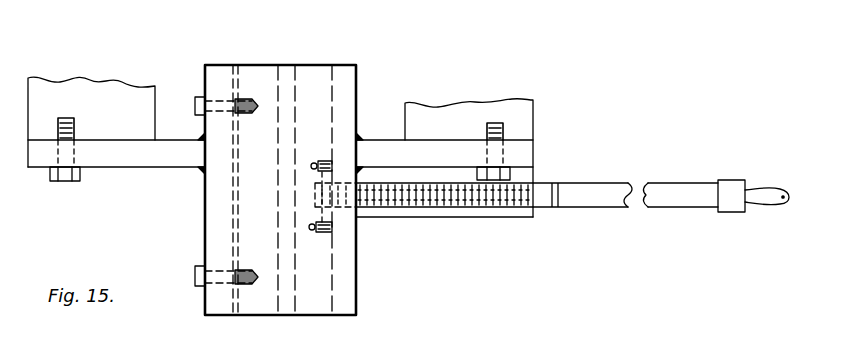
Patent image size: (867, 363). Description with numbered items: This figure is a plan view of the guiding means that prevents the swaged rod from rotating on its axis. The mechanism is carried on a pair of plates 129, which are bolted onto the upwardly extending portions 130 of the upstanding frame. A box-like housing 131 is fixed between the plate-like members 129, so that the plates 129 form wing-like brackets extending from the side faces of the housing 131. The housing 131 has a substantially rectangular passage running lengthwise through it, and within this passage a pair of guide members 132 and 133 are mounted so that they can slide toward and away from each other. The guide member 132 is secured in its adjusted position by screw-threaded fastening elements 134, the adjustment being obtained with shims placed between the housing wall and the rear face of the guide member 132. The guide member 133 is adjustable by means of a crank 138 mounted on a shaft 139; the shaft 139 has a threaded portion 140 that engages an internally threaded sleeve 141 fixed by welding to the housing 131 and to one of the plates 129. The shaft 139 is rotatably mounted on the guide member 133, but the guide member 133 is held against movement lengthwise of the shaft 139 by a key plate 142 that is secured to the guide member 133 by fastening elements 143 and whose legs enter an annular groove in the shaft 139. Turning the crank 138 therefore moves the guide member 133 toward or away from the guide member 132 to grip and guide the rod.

The plates 129 is at (148, 158).
The upwardly extending portions 130 is at (118, 104).
The box-like housing 131 is at (348, 294).
The guide member 132 is at (250, 300).
The guide member 133 is at (308, 298).
The screw-threaded fastening elements 134 is at (197, 96).
The crank 138 is at (730, 212).
The shaft 139 is at (698, 158).
The threaded portion 140 is at (545, 183).
The internally threaded sleeve 141 is at (490, 212).
The key plate 142 is at (345, 218).
The fastening elements 143 is at (325, 160).